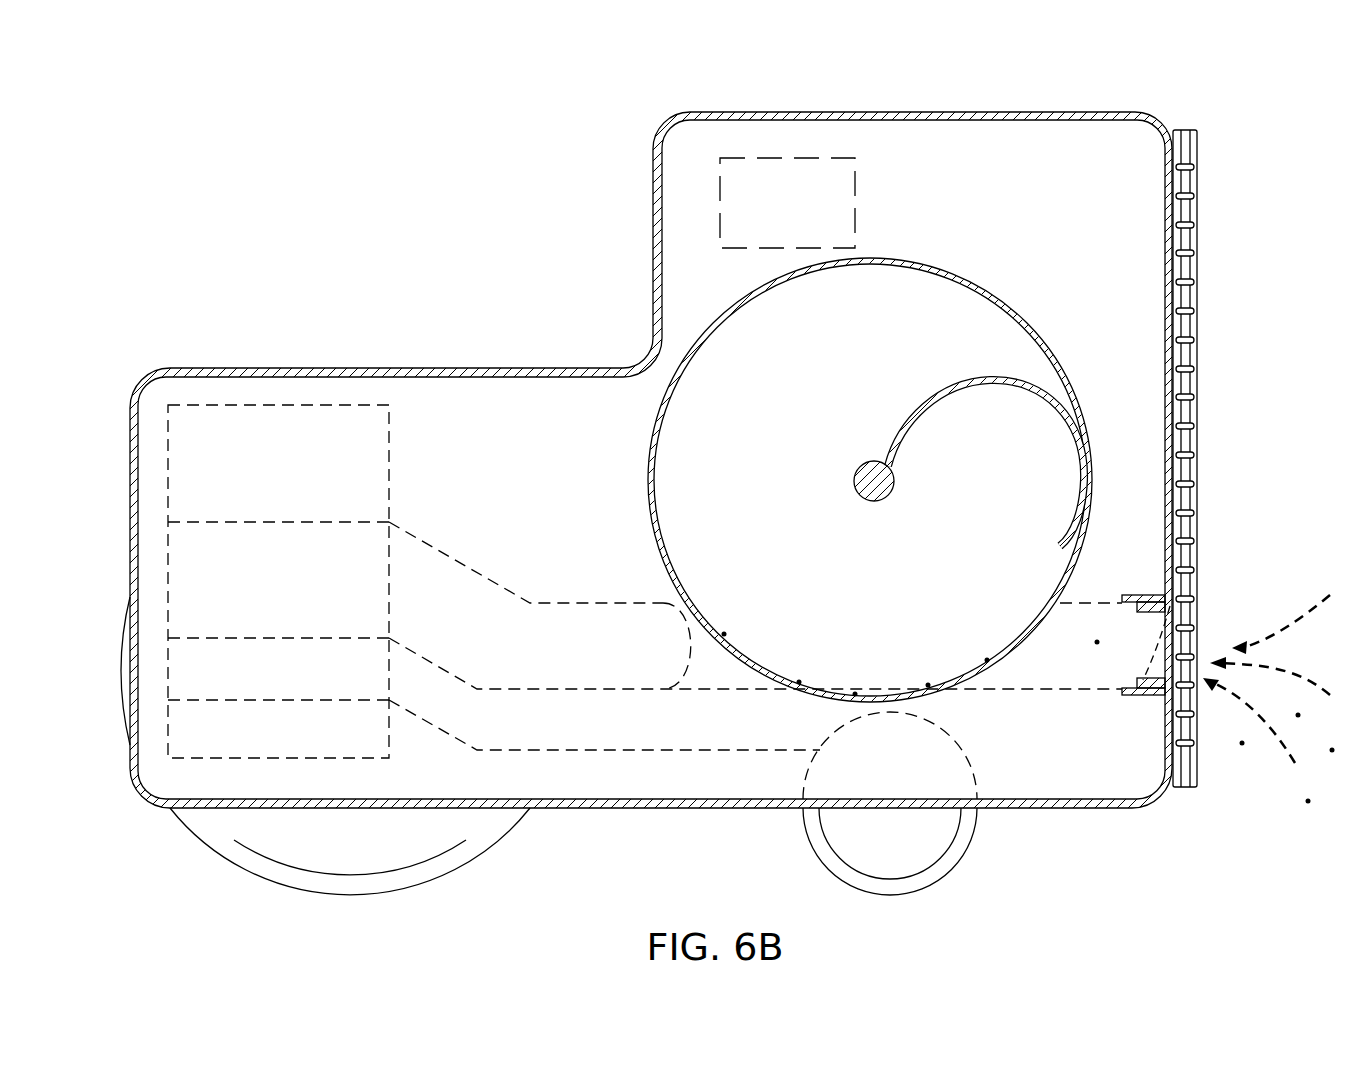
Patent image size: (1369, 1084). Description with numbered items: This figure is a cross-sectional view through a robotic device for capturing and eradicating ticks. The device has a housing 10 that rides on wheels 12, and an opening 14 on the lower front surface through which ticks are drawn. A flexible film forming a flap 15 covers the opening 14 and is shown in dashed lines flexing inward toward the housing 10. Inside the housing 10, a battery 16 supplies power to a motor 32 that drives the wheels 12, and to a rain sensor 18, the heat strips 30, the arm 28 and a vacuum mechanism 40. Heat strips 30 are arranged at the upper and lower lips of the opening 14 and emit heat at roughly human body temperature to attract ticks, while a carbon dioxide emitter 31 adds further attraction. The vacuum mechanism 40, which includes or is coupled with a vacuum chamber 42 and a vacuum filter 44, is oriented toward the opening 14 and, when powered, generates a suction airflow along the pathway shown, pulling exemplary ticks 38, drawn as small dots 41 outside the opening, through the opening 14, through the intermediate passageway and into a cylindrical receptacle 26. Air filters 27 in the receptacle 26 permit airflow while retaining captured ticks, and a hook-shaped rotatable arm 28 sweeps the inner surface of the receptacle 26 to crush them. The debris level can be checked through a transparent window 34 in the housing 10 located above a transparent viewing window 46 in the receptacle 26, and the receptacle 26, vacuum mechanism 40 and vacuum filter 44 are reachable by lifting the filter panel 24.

The housing 10 is at (233, 368).
The wheels 12 is at (207, 822).
The opening 14 is at (1188, 647).
The flap 15 is at (1188, 620).
The battery 16 is at (168, 735).
The rain sensor 18 is at (168, 475).
The filter panel 24 is at (653, 243).
The receptacle 26 is at (687, 366).
The air filters 27 is at (693, 622).
The arm 28 is at (917, 413).
The heat strips 30 is at (1138, 608).
The carbon dioxide emitter 31 is at (845, 173).
The motor 32 is at (168, 650).
The transparent window 34 is at (865, 112).
The ticks 38 is at (1303, 804).
The vacuum mechanism 40 is at (168, 570).
The debris particles 41 is at (1277, 732).
The vacuum chamber 42 is at (462, 562).
The vacuum filter 44 is at (686, 672).
The transparent viewing window 46 is at (880, 257).